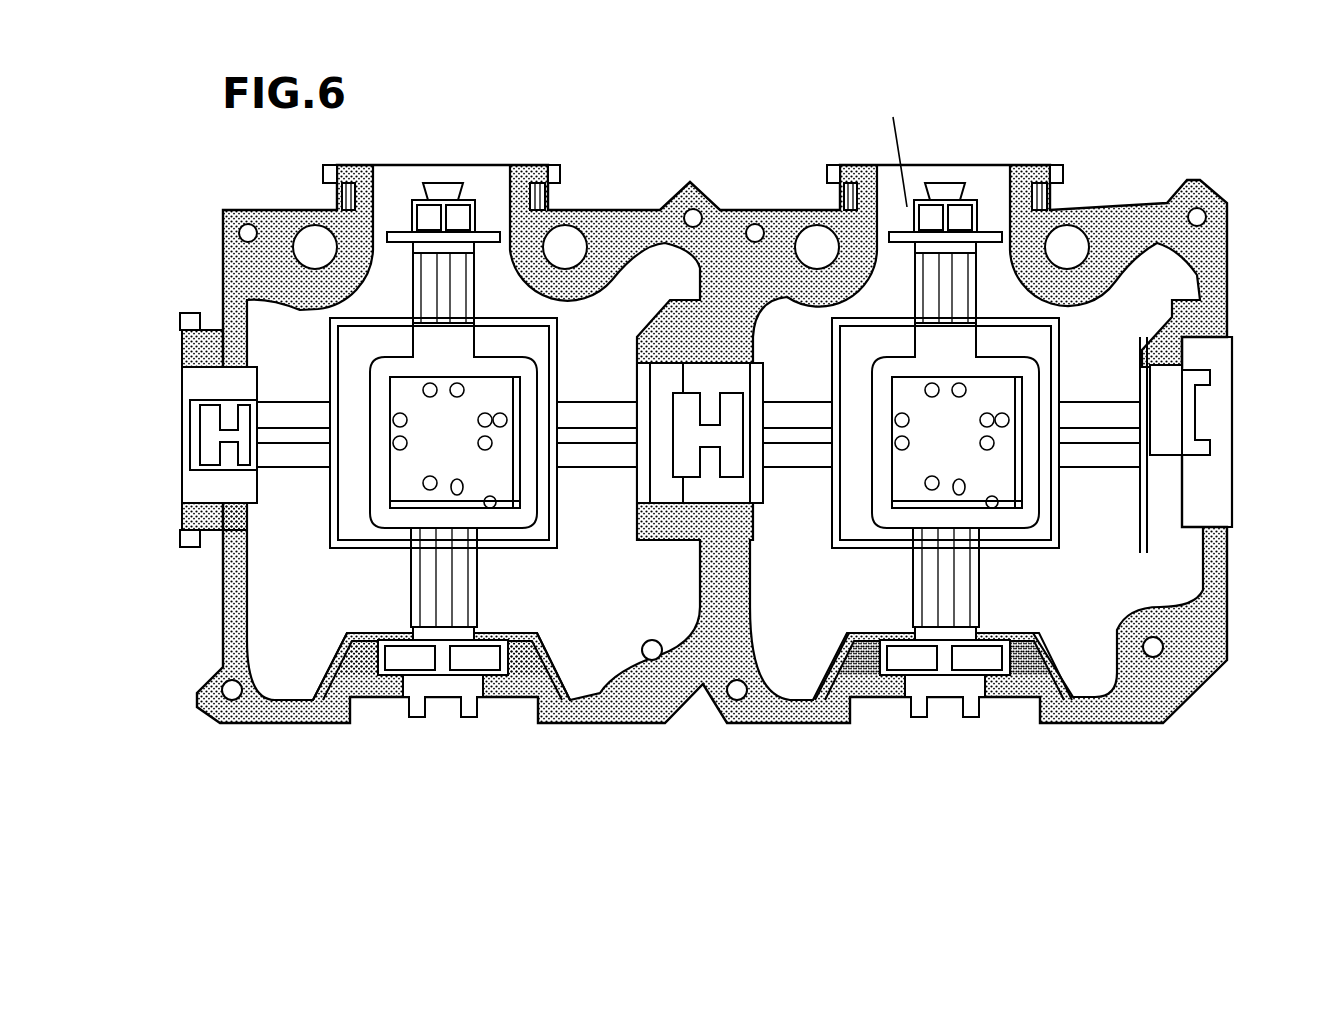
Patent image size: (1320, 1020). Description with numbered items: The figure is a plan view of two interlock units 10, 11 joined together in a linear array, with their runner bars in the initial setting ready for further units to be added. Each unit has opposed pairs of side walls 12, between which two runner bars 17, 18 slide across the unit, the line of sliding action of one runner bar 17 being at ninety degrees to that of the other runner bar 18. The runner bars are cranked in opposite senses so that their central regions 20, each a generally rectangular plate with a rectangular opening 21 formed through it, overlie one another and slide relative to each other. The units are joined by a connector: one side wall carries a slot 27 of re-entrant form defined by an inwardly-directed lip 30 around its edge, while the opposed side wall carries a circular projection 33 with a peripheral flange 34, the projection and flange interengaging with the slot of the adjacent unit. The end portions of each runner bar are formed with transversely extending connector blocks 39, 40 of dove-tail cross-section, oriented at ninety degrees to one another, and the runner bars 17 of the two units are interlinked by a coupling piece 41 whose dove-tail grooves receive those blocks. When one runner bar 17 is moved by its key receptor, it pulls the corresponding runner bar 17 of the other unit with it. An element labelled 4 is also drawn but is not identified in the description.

The nut 4 is at (978, 700).
The interlock unit 10 is at (612, 190).
The interlock unit 11 is at (1113, 205).
The side walls 12 is at (770, 206).
The runner bar 17 is at (600, 458).
The runner bar 18 is at (410, 607).
The central region 20 is at (377, 495).
The rectangular opening 21 is at (500, 493).
The slot 27 is at (1005, 708).
The inwardly-directed lip 30 is at (350, 722).
The circular projection 33 is at (182, 343).
The flange 34 is at (829, 175).
The connector block 39 is at (1160, 458).
The connector block 40 is at (448, 185).
The coupling piece 41 is at (680, 410).